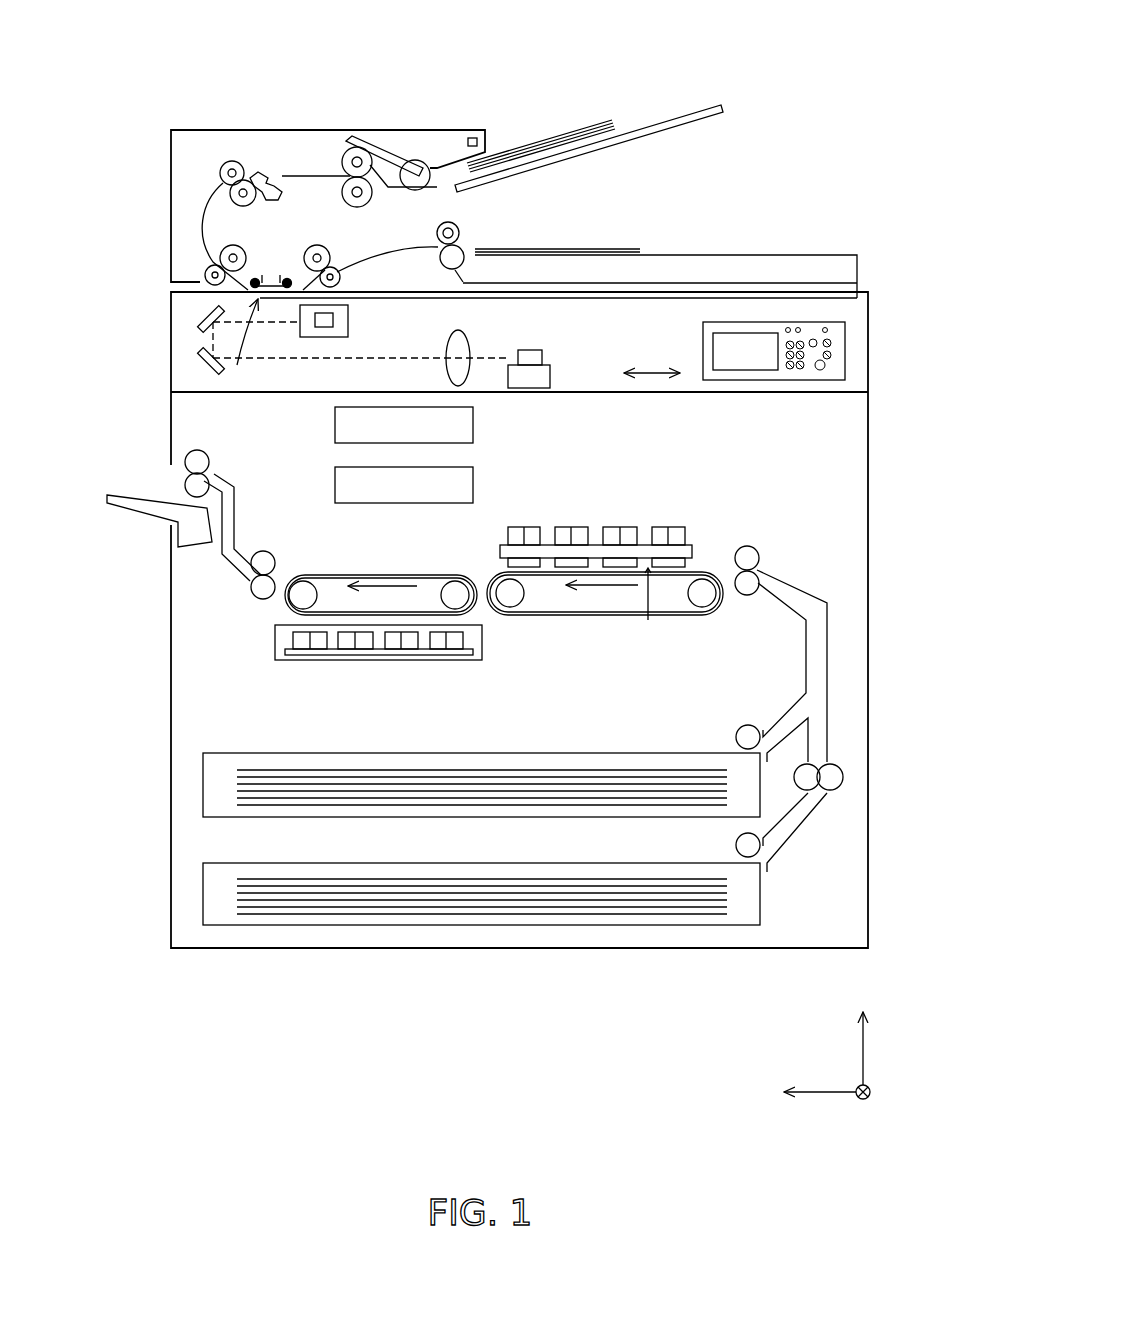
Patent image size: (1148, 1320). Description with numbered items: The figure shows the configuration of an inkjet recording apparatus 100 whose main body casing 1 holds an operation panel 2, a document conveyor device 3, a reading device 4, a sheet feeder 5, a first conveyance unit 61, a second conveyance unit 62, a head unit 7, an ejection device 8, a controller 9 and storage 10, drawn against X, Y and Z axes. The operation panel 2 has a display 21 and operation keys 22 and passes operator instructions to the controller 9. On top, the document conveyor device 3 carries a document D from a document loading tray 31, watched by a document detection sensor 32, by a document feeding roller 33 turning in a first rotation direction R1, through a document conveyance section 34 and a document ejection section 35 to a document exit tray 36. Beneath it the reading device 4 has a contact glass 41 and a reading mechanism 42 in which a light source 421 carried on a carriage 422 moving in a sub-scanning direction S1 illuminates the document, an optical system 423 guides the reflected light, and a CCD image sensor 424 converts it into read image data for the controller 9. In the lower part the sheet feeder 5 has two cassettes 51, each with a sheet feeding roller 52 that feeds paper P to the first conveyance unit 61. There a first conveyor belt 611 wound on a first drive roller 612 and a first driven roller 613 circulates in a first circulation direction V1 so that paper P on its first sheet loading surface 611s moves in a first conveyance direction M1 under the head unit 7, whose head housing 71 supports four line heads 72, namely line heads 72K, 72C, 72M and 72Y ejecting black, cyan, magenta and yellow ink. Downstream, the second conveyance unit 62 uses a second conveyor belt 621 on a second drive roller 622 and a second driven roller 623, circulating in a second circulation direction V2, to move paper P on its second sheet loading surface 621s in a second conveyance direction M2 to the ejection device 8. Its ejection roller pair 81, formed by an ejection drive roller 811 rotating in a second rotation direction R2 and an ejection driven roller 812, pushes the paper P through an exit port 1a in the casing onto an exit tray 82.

The inkjet recording apparatus 100 is at (756, 96).
The main body casing 1 is at (870, 460).
The exit port 1a is at (170, 471).
The operation panel 2 is at (799, 296).
The display 21 is at (738, 333).
The operation keys 22 is at (803, 336).
The document conveyor device 3 is at (674, 104).
The document loading tray 31 is at (658, 121).
The document detection sensor 32 is at (474, 136).
The document feeding roller 33 is at (415, 181).
The document conveyance section 34 is at (280, 161).
The document ejection section 35 is at (390, 251).
The document exit tray 36 is at (773, 255).
The reading device 4 is at (878, 323).
The contact glass 41 is at (850, 300).
The reading mechanism 42 is at (578, 334).
The light source 421 is at (325, 328).
The carriage 422 is at (348, 313).
The optical system 423 is at (473, 331).
The CCD image sensor 424 is at (553, 370).
The sheet feeder 5 is at (150, 844).
The cassette 51 is at (500, 818).
The sheet feeding roller 52 is at (736, 737).
The first conveyance unit 61 is at (722, 566).
The first conveyor belt 611 is at (680, 624).
The first sheet loading surface 611s is at (648, 620).
The first drive roller 612 is at (513, 600).
The first driven roller 613 is at (706, 600).
The second conveyance unit 62 is at (316, 522).
The second conveyor belt 621 is at (299, 572).
The second sheet loading surface 621s is at (446, 572).
The second drive roller 622 is at (306, 590).
The second driven roller 623 is at (450, 594).
The head unit 7 is at (731, 451).
The head housing 71 is at (693, 552).
The line heads 72 is at (610, 489).
The line head 72Y is at (526, 526).
The line head 72M is at (578, 526).
The line head 72C is at (628, 526).
The line head 72K is at (679, 518).
The ejection device 8 is at (106, 433).
The ejection roller pair 81 is at (253, 449).
The ejection drive roller 811 is at (202, 453).
The ejection driven roller 812 is at (206, 484).
The exit tray 82 is at (136, 497).
The controller 9 is at (460, 470).
The storage 10 is at (473, 426).
The document D is at (592, 128).
The paper P is at (258, 806).
The first rotation direction R1 is at (420, 151).
The second rotation direction R2 is at (184, 455).
The sub-scanning direction S1 is at (652, 355).
The first conveyance direction M1 is at (600, 590).
The second conveyance direction M2 is at (371, 583).
The first circulation direction V1 is at (495, 619).
The second circulation direction V2 is at (280, 613).
The X axis X is at (870, 1105).
The Y axis Y is at (808, 1092).
The Z axis Z is at (863, 1031).